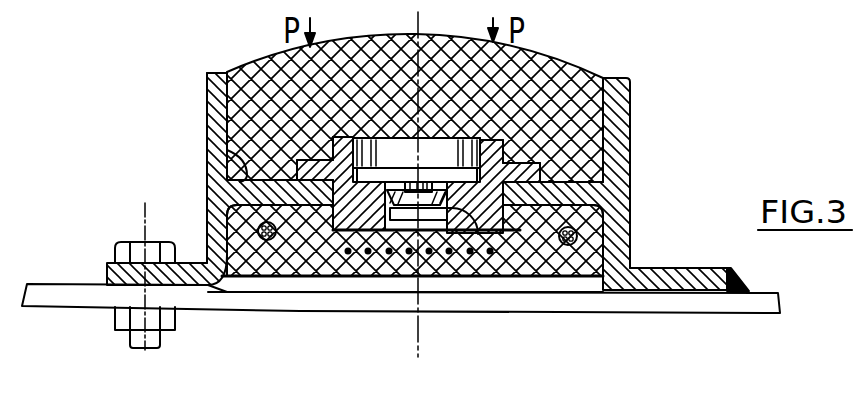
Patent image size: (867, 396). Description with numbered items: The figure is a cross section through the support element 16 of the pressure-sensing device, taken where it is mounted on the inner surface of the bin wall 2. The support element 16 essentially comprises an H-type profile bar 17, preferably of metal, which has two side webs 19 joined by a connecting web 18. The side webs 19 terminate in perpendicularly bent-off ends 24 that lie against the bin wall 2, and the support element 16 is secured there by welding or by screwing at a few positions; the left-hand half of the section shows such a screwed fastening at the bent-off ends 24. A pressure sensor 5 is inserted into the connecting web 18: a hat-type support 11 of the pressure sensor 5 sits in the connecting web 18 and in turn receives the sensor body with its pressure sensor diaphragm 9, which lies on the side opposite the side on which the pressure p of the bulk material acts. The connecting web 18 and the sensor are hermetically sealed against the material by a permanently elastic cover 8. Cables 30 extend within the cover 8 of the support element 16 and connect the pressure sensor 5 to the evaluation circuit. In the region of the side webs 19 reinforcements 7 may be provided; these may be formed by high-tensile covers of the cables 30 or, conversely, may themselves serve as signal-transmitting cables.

The bin wall 2 is at (50, 288).
The pressure sensor 5 is at (352, 134).
The reinforcements 7 is at (395, 277).
The permanently elastic cover 8 is at (560, 100).
The pressure sensor diaphragm 9 is at (482, 240).
The hat-type support 11 is at (322, 278).
The support element 16 is at (638, 92).
The H-type profile bar 17 is at (634, 148).
The connecting web 18 is at (233, 147).
The side webs 19 is at (218, 105).
The bent-off ends 24 is at (123, 250).
The cables 30 is at (265, 241).